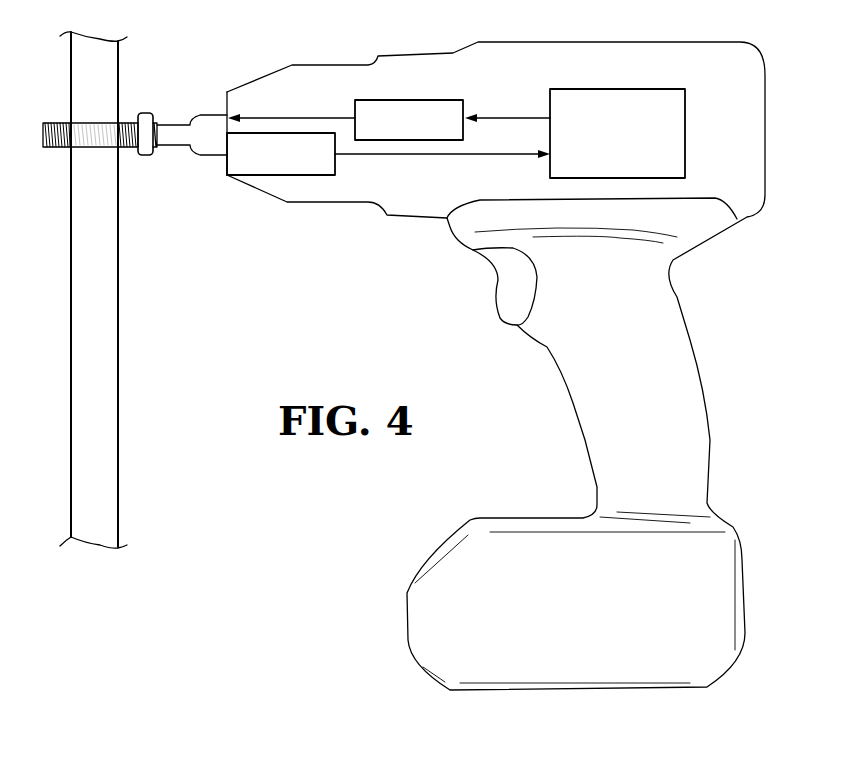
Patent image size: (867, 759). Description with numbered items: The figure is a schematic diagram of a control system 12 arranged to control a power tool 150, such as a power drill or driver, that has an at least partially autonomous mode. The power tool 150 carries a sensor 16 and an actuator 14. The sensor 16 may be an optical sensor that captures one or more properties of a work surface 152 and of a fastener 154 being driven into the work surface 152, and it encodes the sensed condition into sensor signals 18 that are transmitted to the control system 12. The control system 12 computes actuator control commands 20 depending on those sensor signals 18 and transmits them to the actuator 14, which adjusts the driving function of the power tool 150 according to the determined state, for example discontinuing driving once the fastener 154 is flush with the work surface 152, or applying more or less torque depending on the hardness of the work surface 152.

The control system 12 is at (598, 89).
The actuator 14 is at (387, 100).
The sensor 16 is at (280, 175).
The sensor signals 18 is at (408, 155).
The actuator control commands 20 is at (487, 116).
The power tool 150 is at (552, 382).
The work surface 152 is at (118, 350).
The fastener 154 is at (143, 156).